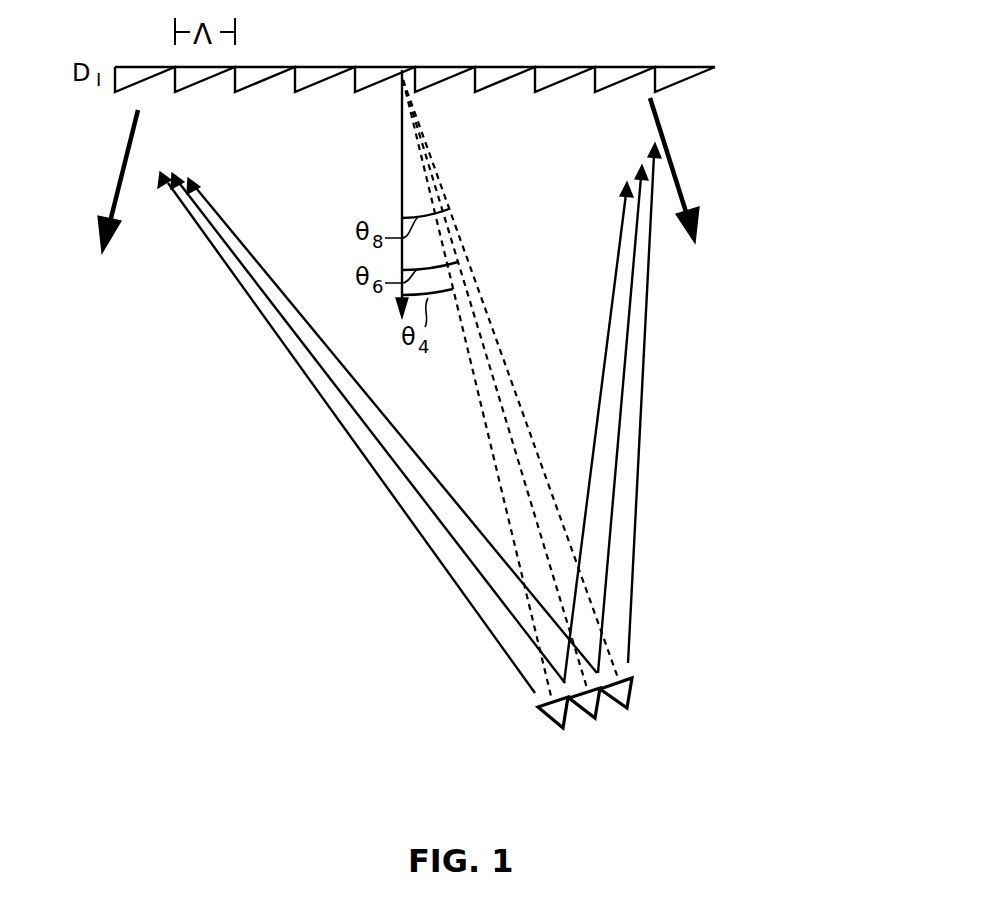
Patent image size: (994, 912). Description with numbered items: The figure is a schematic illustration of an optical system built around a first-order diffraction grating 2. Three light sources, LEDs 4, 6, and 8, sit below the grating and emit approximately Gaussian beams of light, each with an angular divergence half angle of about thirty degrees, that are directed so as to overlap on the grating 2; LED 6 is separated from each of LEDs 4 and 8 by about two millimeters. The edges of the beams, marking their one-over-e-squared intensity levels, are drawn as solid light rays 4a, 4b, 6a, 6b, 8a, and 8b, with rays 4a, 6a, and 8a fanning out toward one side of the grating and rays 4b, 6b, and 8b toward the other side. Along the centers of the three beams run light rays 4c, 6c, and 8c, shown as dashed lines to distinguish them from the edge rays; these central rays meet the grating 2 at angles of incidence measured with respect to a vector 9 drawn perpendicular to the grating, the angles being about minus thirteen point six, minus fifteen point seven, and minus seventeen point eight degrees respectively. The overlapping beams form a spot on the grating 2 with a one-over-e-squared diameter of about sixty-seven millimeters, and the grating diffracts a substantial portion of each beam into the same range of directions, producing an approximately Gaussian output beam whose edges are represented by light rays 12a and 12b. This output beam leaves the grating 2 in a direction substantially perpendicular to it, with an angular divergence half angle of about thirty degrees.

The first-order diffraction grating 2 is at (727, 68).
The LED 4 is at (552, 722).
The LED 6 is at (592, 714).
The LED 8 is at (632, 688).
The vector 9 is at (402, 170).
The light ray 4a is at (310, 378).
The light ray 6a is at (360, 418).
The light ray 8a is at (423, 463).
The light ray 4b is at (613, 310).
The light ray 6b is at (625, 378).
The light ray 8b is at (640, 447).
The light ray 4c is at (482, 400).
The light ray 6c is at (510, 443).
The light ray 8c is at (515, 392).
The light ray 12a is at (120, 182).
The light ray 12b is at (664, 143).